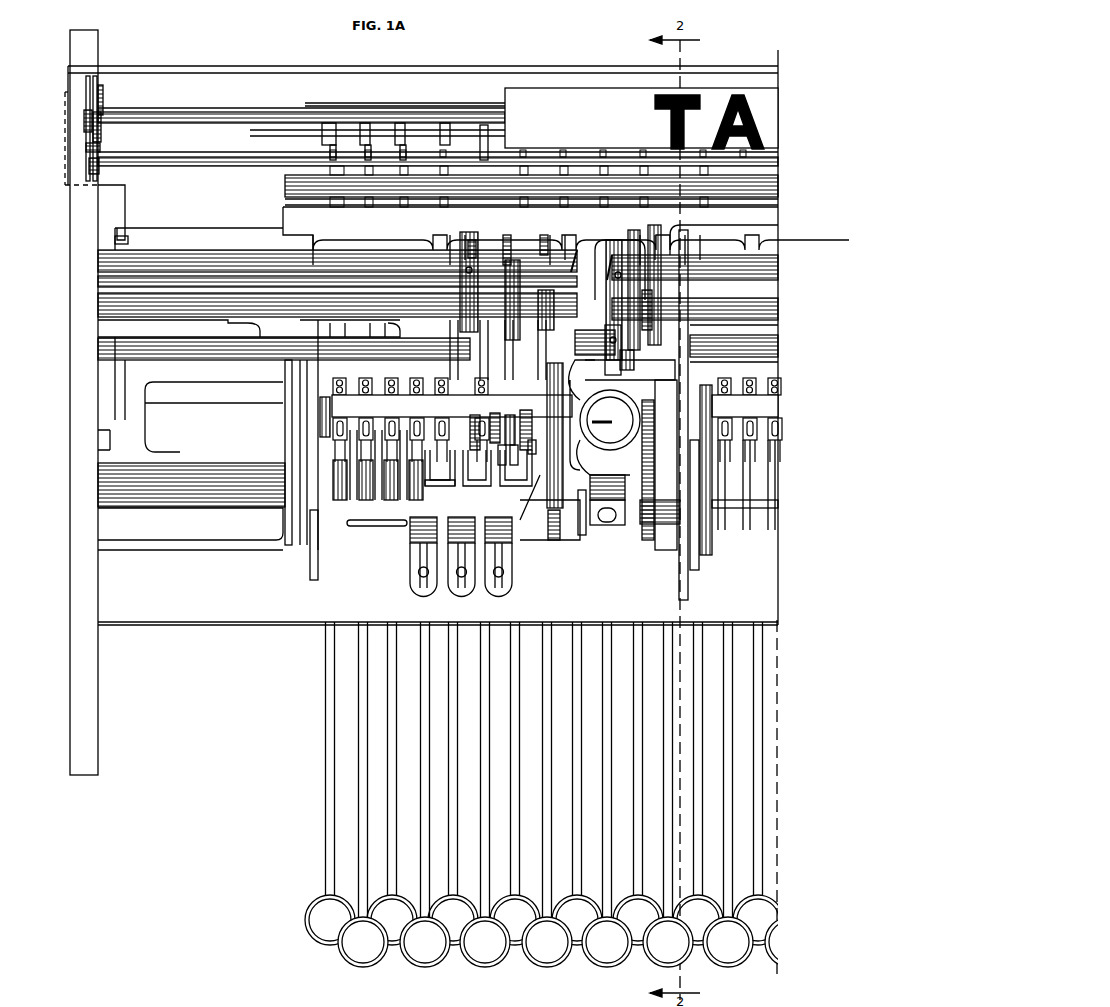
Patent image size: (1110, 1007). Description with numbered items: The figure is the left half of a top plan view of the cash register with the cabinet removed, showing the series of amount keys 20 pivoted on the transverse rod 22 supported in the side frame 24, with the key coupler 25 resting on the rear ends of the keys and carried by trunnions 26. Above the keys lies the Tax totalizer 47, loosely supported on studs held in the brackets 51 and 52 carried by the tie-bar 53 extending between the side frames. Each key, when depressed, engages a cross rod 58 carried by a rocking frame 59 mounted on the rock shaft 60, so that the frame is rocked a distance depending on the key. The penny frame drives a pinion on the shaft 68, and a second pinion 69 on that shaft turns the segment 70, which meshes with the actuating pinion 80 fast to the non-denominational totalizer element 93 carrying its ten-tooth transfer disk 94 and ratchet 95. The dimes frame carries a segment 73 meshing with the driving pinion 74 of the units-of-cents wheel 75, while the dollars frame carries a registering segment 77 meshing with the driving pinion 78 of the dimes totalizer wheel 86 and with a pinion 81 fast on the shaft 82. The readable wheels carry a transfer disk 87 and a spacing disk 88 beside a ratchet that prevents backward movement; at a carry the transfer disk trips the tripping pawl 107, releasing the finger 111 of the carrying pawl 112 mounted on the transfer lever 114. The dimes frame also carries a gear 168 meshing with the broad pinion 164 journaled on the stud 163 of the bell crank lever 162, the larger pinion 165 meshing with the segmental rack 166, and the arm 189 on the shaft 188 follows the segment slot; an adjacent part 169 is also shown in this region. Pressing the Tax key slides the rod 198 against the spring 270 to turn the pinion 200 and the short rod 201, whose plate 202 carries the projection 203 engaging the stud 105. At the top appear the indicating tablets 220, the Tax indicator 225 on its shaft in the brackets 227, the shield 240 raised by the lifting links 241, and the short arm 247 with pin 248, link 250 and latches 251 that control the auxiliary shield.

The amount keys 20 is at (487, 783).
The transverse rod 22 is at (198, 475).
The side frame 24 is at (98, 582).
The key coupler 25 is at (203, 397).
The trunnions 26 is at (130, 442).
The Tax totalizer 47 is at (537, 520).
The bracket 51 is at (285, 428).
The bracket 52 is at (638, 523).
The tie-bar 53 is at (246, 615).
The cross rod 58 is at (285, 184).
The rocking frame 59 is at (290, 215).
The rock shaft 60 is at (702, 264).
The shaft 68 is at (130, 321).
The pinion 69 is at (550, 290).
The segment 70 is at (546, 238).
The segment 73 is at (510, 242).
The driving pinion 74 is at (508, 451).
The units-of-cents wheel 75 is at (481, 425).
The registering segment 77 is at (451, 326).
The driving pinion 78 is at (477, 468).
The actuating pinion 80 is at (550, 448).
The pinion 81 is at (467, 252).
The shaft 82 is at (154, 265).
The dimes totalizer wheel 86 is at (446, 388).
The transfer disk 87 is at (462, 422).
The spacing disk 88 is at (503, 418).
The non-denominational totalizer element 93 is at (526, 418).
The transfer disk 94 is at (509, 457).
The ratchet 95 is at (536, 447).
The stud 105 is at (563, 525).
The tripping pawl 107 is at (450, 468).
The finger 111 is at (476, 478).
The carrying pawl 112 is at (512, 571).
The transfer lever 114 is at (512, 588).
The bell crank lever 162 is at (683, 370).
The stud 163 is at (682, 316).
The broad pinion 164 is at (635, 321).
The pinion 165 is at (628, 312).
The segmental rack 166 is at (635, 348).
The gear 168 is at (653, 228).
The bracket 169 is at (635, 374).
The shaft 188 is at (228, 355).
The arm 189 is at (610, 326).
The rod 198 is at (670, 513).
The pinion 200 is at (602, 518).
The short rod 201 is at (605, 485).
The plate 202 is at (588, 526).
The projection 203 is at (578, 535).
The indicating tablets 220 is at (470, 101).
The indicator 225 is at (555, 99).
The brackets 227 is at (102, 101).
The shield 240 is at (506, 66).
The lifting links 241 is at (65, 184).
The short arm 247 is at (101, 138).
The pin 248 is at (84, 134).
The link 250 is at (86, 154).
The latches 251 is at (99, 170).
The spring 270 is at (309, 535).